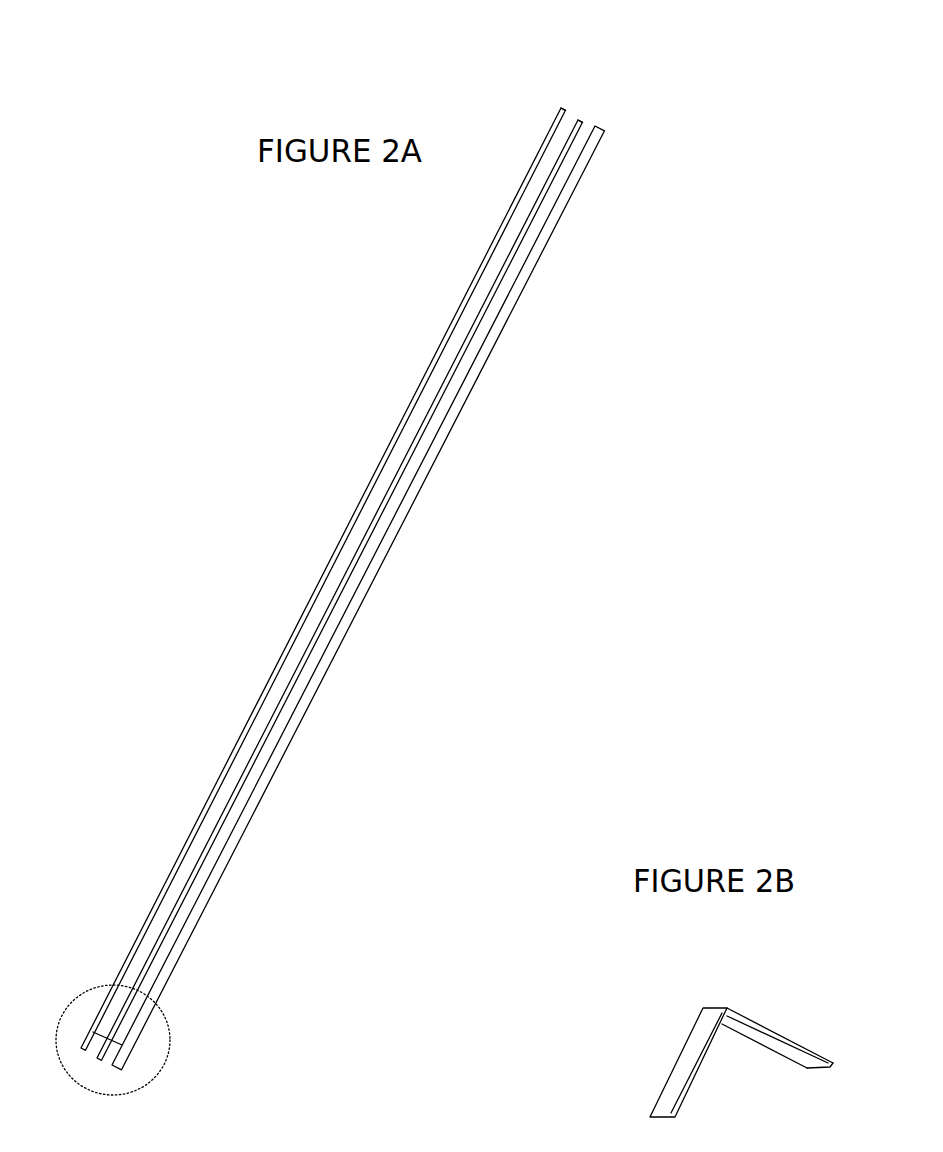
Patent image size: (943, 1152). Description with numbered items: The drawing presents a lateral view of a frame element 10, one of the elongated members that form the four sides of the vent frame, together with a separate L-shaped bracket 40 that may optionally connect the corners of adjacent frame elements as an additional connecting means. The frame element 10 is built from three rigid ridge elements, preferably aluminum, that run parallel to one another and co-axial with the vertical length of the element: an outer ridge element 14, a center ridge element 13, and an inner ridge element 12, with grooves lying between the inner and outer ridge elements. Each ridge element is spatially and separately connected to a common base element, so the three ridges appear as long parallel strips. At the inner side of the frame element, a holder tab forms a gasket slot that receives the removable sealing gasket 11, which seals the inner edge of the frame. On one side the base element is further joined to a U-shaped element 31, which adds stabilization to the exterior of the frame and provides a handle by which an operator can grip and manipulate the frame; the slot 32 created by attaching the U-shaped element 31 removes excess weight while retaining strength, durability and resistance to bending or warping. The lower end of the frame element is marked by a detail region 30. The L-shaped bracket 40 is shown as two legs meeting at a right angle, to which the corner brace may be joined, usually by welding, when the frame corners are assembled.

In FIG. 2A, the frame element 10 is at (375, 554).
In FIG. 2A, the sealing gasket 11 is at (409, 598).
In FIG. 2A, the inner ridge element 12 is at (409, 598).
In FIG. 2A, the center ridge element 13 is at (413, 556).
In FIG. 2A, the outer ridge element 14 is at (331, 532).
In FIG. 2A, the lower end detail region 30 is at (184, 1040).
In FIG. 2A, the U-shaped element 31 is at (572, 142).
In FIG. 2A, the slot 32 is at (570, 133).
In FIG. 2B, the angle bracket 40 is at (698, 1059).